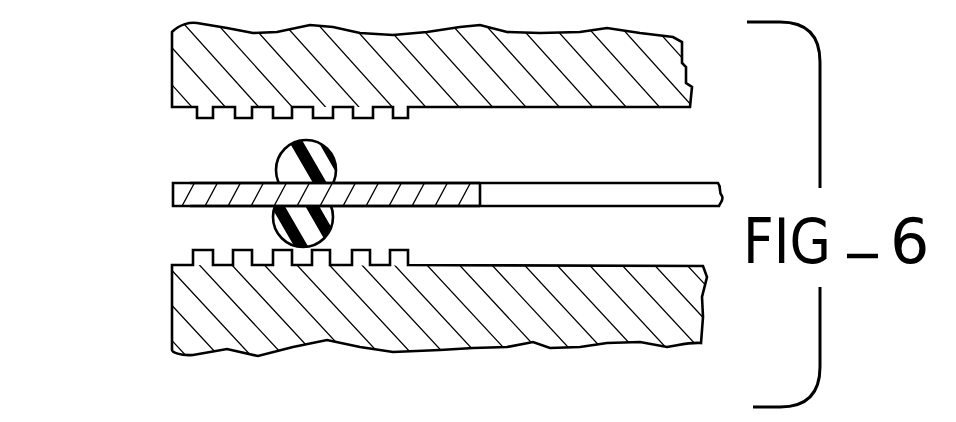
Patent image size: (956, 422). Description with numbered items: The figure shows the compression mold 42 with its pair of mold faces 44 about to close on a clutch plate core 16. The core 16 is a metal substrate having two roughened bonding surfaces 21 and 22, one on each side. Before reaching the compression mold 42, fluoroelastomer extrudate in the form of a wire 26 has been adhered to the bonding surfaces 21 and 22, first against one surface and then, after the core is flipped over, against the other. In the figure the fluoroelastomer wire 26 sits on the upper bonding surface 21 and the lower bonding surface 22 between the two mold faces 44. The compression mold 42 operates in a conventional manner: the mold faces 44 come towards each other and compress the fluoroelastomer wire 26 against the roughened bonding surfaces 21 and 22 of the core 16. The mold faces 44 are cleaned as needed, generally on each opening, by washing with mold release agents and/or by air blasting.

The compression mold 42 is at (96, 103).
The mold faces 44 is at (182, 108).
The core 16 is at (407, 190).
The roughened bonding surface 21 is at (230, 182).
The roughened bonding surface 22 is at (233, 208).
The fluoroelastomer wire 26 is at (335, 159).